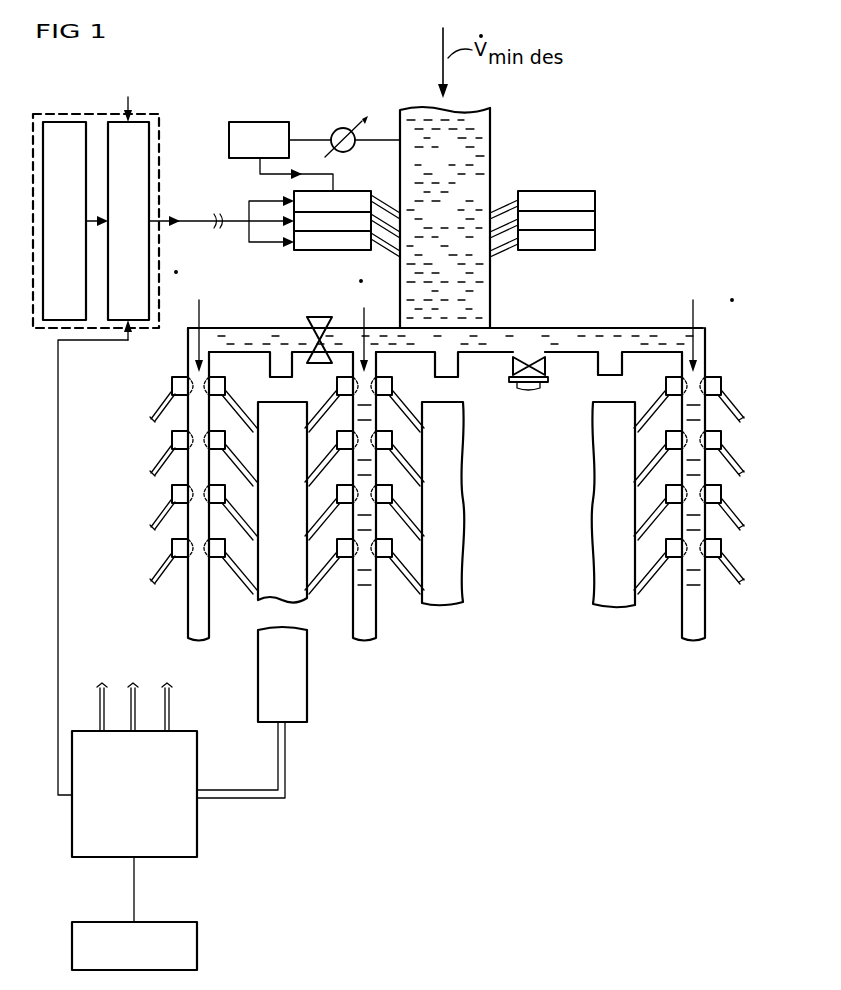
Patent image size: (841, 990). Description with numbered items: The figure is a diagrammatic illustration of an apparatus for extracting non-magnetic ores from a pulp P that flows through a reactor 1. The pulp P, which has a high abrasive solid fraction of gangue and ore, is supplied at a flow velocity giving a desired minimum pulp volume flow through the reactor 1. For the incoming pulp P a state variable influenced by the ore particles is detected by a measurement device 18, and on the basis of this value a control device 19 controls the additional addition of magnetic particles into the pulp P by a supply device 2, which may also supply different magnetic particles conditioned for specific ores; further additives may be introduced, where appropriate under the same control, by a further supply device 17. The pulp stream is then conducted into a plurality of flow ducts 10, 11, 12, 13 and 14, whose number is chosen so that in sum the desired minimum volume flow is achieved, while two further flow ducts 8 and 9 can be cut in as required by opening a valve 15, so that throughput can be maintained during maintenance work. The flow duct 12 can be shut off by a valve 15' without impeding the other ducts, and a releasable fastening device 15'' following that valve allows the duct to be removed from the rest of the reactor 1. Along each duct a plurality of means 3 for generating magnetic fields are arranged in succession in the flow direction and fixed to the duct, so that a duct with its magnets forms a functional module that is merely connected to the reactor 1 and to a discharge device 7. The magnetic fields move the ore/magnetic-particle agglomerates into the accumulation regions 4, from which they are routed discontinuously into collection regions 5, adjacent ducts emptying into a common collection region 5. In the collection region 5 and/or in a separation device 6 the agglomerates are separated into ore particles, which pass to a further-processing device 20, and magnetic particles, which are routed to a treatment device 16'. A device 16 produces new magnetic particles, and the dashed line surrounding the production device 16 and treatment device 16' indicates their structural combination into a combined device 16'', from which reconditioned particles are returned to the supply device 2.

The reactor 1 is at (678, 298).
The supply device 2 is at (287, 254).
The means for generating a magnetic field 3 is at (172, 386).
The accumulation region 4 is at (190, 378).
The collection region 5 is at (308, 638).
The separation device 6 is at (197, 766).
The discharge device 7 is at (153, 406).
The further flow duct 8 is at (181, 368).
The further flow duct 9 is at (272, 360).
The flow duct 10 is at (353, 362).
The flow duct 11 is at (458, 368).
The flow duct 12 is at (545, 352).
The flow duct 13 is at (625, 352).
The flow duct 14 is at (710, 354).
The valve 15 is at (291, 330).
The valve 15' is at (555, 376).
The releasable fastening device 15'' is at (547, 415).
The device for the production of magnetic particles 16 is at (75, 191).
The treatment device 16' is at (123, 221).
The combined device 16'' is at (201, 200).
The further supply device 17 is at (592, 178).
The measurement device 18 is at (343, 128).
The control device 19 is at (260, 122).
The further-processing device 20 is at (197, 948).
The pulp P is at (492, 150).